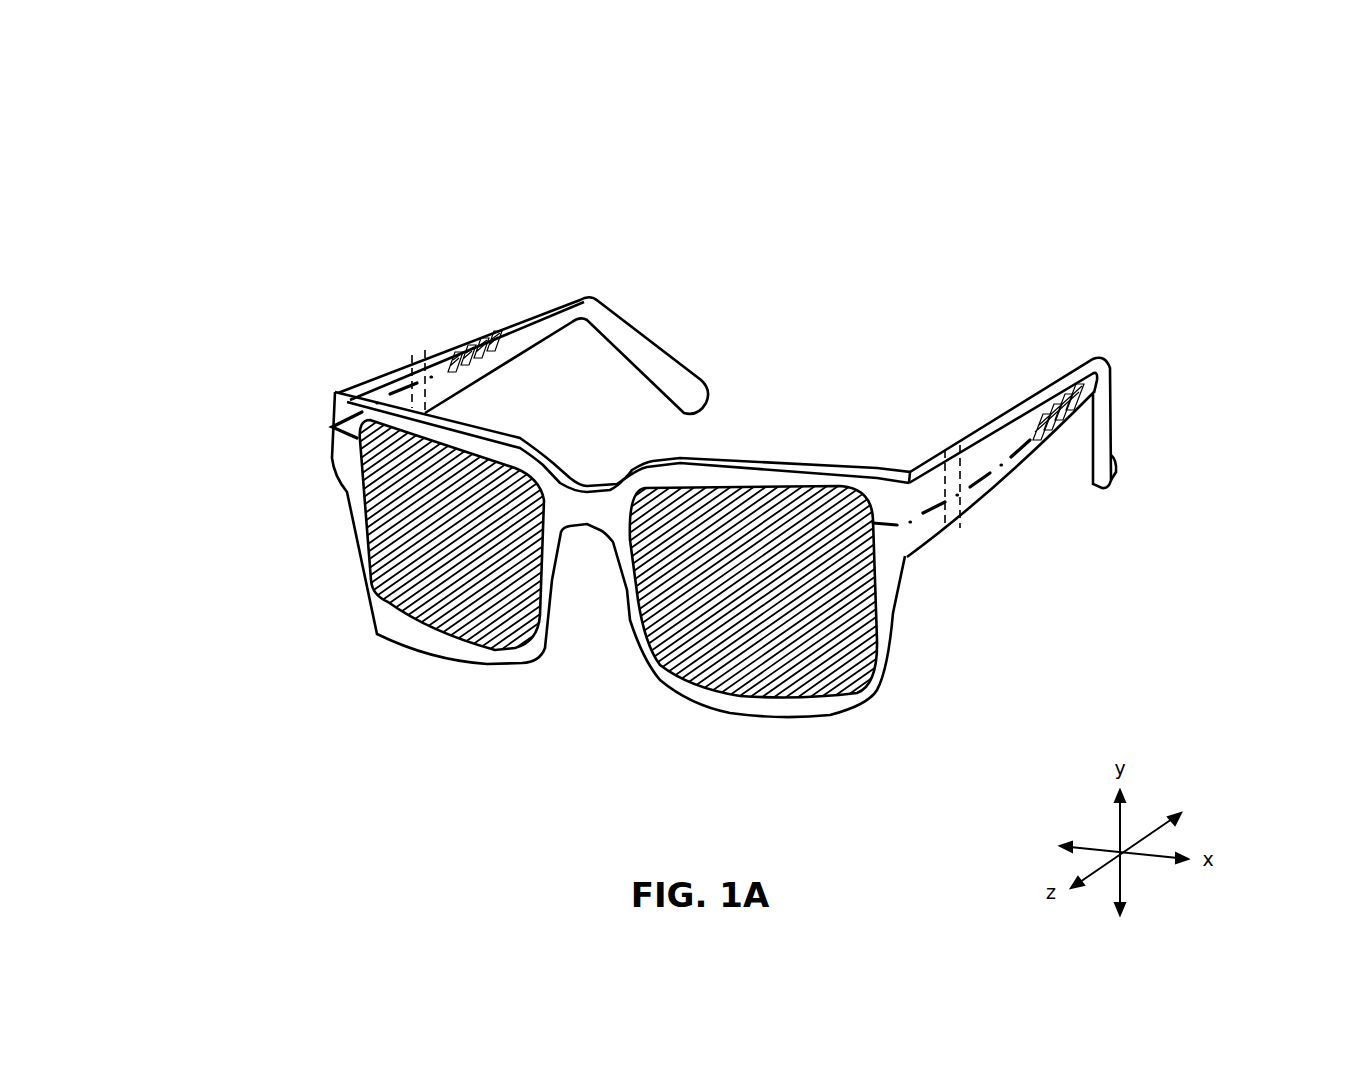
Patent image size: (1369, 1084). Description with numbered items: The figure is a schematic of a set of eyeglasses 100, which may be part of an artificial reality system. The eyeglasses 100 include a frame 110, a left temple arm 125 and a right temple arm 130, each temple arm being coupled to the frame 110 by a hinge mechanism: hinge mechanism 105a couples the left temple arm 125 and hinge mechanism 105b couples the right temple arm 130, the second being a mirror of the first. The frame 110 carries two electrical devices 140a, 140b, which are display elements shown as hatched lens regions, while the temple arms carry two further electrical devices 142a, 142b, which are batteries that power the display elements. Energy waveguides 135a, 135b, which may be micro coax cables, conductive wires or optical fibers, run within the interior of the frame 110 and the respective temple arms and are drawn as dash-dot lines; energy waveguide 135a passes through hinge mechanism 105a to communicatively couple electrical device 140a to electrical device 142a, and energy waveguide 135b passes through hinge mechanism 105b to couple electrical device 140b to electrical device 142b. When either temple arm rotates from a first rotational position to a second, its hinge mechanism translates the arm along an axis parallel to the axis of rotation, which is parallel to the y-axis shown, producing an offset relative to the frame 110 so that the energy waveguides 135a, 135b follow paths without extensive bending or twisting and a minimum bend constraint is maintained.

The eyeglasses 100 is at (186, 104).
The frame 110 is at (903, 558).
The left temple arm 125 is at (1105, 438).
The right temple arm 130 is at (550, 317).
The hinge mechanism 105a is at (940, 455).
The hinge mechanism 105b is at (408, 360).
The energy waveguide 135a is at (987, 482).
The energy waveguide 135b is at (355, 384).
The electrical device 140a is at (712, 659).
The electrical device 140b is at (402, 535).
The electrical device 142a is at (1060, 400).
The electrical device 142b is at (477, 347).